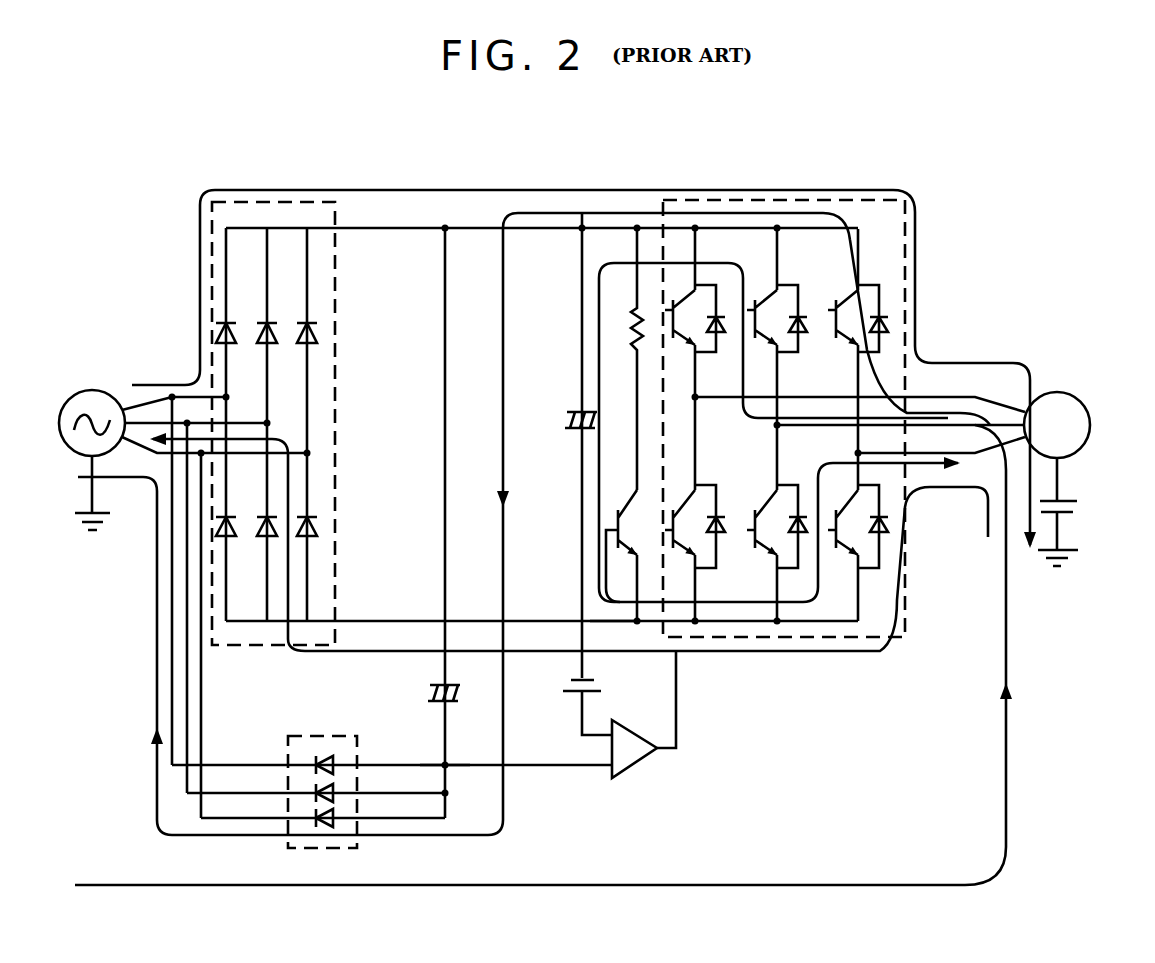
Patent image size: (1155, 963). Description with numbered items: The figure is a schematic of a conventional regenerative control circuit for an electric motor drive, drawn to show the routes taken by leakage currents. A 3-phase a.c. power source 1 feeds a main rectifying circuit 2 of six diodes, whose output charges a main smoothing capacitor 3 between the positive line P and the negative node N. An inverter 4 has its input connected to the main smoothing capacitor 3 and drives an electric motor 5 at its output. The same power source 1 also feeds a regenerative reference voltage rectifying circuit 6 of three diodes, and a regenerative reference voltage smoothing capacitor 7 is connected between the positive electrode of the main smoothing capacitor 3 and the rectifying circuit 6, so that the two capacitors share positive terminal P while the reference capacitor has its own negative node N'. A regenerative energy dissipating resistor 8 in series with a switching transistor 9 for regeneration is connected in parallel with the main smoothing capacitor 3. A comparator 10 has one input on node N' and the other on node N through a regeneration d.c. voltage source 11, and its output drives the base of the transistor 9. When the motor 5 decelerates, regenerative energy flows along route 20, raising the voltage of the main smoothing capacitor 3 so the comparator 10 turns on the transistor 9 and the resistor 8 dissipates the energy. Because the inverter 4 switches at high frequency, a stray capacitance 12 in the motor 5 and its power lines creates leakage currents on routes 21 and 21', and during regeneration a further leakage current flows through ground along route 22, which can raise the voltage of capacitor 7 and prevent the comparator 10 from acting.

The 3-phase a.c. power source 1 is at (97, 390).
The main rectifying circuit 2 is at (275, 200).
The main smoothing capacitor 3 is at (567, 420).
The inverter 4 is at (782, 200).
The electric motor 5 is at (1058, 392).
The regenerative reference voltage rectifying circuit 6 is at (327, 736).
The regenerative reference voltage smoothing capacitor 7 is at (430, 690).
The regenerative energy dissipating resistor 8 is at (630, 326).
The switching transistor for regeneration 9 is at (628, 512).
The comparator 10 is at (640, 731).
The regeneration d.c. voltage source 11 is at (598, 684).
The stray capacitance 12 is at (1080, 505).
The route of regenerative energy 20 is at (599, 343).
The leakage current route 21 is at (584, 338).
The leakage current route 21' is at (543, 655).
The leakage current route through ground 22 is at (530, 214).
The positive electrode node P is at (582, 213).
The negative terminal node of the main smoothing capacitor N is at (587, 596).
The negative terminal node of the regenerative reference voltage smoothing capacitor N' is at (426, 746).